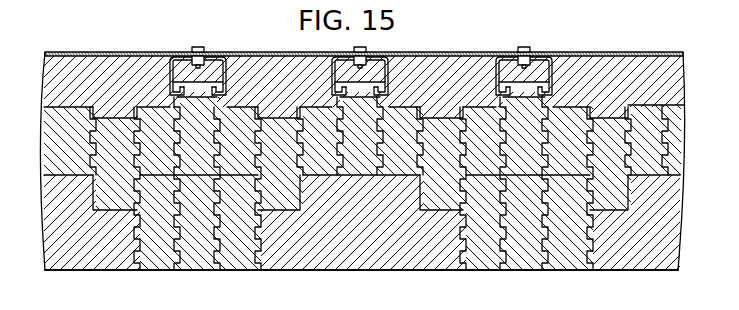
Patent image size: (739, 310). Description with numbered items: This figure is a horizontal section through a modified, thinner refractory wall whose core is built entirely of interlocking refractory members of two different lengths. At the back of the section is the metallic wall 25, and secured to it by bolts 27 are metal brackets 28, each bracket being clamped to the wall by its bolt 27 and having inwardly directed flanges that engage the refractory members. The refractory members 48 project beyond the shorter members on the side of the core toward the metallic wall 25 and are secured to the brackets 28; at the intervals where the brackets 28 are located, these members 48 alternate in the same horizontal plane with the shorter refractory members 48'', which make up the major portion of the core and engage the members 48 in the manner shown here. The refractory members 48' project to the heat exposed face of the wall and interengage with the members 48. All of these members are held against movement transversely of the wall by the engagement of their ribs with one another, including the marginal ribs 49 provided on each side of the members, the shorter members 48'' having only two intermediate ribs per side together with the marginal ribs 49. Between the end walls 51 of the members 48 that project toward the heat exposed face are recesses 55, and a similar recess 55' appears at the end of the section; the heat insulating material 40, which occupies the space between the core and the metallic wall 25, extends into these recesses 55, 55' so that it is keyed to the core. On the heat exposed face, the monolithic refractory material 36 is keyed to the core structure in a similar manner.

The heat insulating material 40 is at (90, 53).
The metallic wall 25 is at (230, 53).
The bolt 27 is at (197, 47).
The metal bracket 28 is at (170, 66).
The marginal rib 49 is at (181, 88).
The refractory member 48 is at (362, 173).
The refractory member 48' is at (354, 201).
The shorter refractory member 48'' is at (348, 140).
The end wall 51 is at (117, 121).
The recess 55 is at (278, 99).
The end projection 55' is at (623, 98).
The monolithic refractory material 36 is at (412, 266).